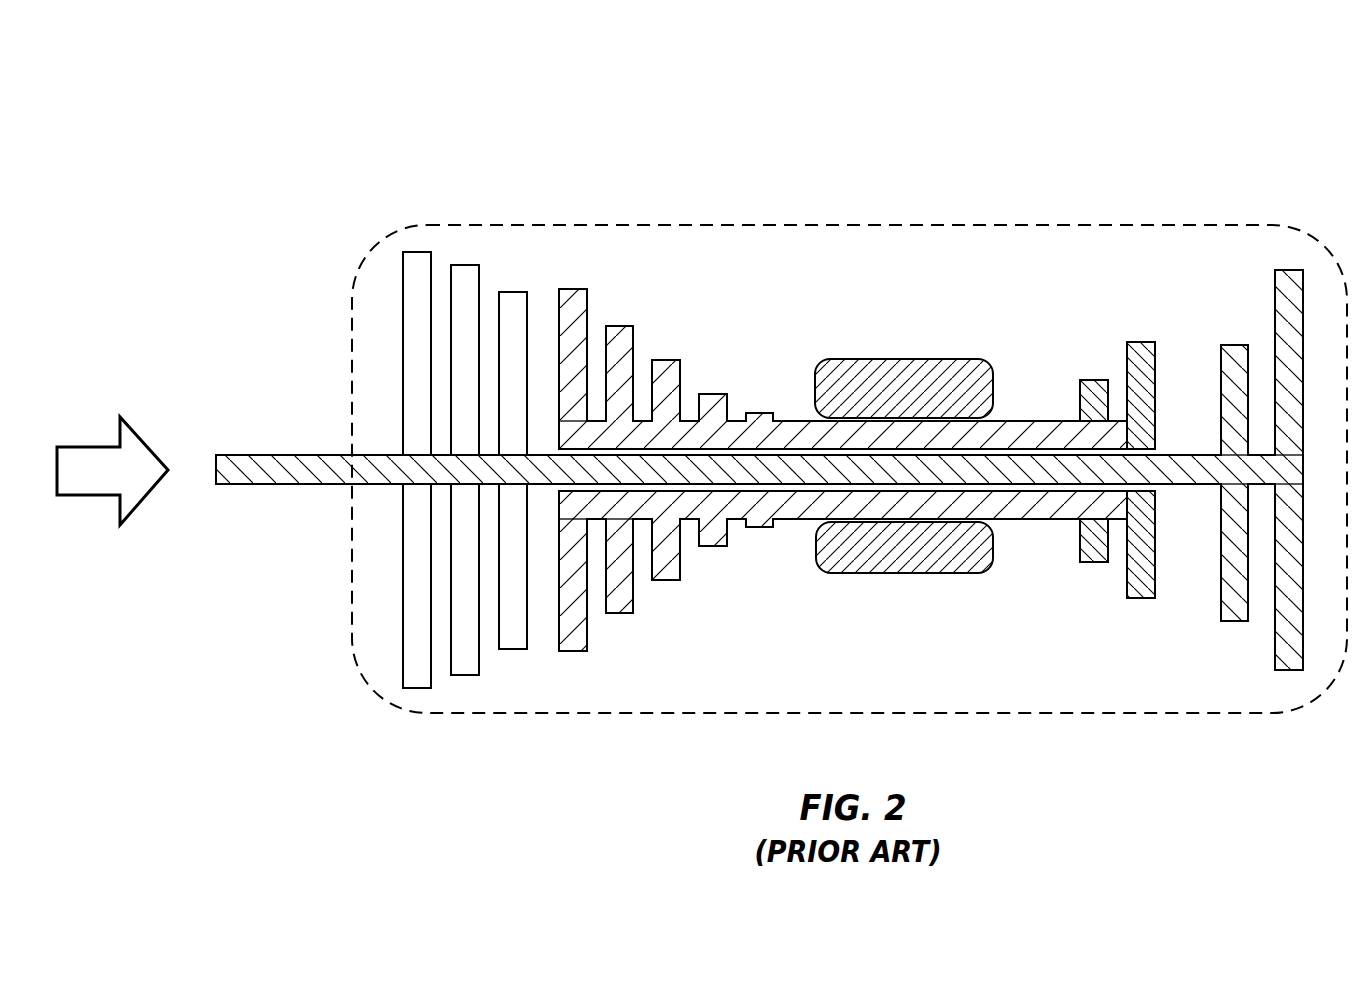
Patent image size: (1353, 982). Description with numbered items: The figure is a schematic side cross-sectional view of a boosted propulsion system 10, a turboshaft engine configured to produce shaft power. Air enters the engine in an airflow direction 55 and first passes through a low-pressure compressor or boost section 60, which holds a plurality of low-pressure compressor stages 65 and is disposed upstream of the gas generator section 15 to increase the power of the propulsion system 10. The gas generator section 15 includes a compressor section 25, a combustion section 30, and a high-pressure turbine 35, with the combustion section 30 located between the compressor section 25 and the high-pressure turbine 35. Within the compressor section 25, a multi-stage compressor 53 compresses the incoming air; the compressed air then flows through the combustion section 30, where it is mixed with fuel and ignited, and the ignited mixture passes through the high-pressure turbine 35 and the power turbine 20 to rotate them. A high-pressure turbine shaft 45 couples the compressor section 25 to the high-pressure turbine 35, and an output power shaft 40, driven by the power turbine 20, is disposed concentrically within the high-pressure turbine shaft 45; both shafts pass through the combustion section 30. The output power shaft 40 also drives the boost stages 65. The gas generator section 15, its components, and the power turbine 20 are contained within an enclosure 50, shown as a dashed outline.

The propulsion system 10 is at (168, 147).
The gas generator section 15 is at (557, 112).
The power turbine 20 is at (1252, 254).
The compressor section 25 is at (810, 197).
The combustion section 30 is at (913, 582).
The high-pressure turbine 35 is at (1088, 353).
The output power shaft 40 is at (307, 485).
The high-pressure turbine shaft 45 is at (795, 507).
The enclosure 50 is at (1268, 715).
The multi-stage compressor 53 is at (618, 645).
The airflow direction 55 is at (100, 443).
The low-pressure compressor section 60 is at (373, 197).
The low-pressure compressor stages 65 is at (374, 373).